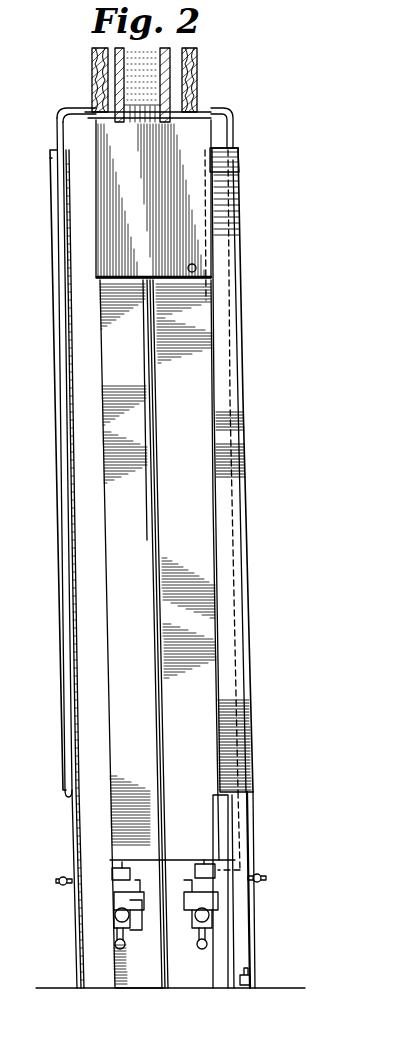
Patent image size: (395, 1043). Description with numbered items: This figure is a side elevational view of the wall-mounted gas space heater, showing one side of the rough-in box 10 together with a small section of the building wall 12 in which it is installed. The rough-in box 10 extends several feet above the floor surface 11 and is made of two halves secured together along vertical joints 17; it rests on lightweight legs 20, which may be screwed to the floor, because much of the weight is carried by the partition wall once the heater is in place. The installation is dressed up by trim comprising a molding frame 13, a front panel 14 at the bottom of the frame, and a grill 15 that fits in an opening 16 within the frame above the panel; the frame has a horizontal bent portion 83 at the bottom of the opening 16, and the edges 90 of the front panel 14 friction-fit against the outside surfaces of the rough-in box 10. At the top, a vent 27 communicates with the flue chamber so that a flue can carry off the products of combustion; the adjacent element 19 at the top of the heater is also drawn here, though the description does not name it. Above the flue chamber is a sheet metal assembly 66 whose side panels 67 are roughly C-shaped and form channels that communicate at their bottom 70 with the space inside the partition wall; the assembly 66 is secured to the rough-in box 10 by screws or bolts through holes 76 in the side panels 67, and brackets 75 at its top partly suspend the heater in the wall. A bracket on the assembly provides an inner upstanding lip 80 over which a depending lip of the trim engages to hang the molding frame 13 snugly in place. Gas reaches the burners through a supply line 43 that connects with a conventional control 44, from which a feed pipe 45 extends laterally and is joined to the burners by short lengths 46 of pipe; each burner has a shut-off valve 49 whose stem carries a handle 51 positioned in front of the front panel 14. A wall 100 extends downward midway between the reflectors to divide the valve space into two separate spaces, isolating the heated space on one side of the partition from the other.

The rough-in box 10 is at (195, 490).
The floor surface 11 is at (58, 988).
The building wall 12 is at (92, 58).
The molding frame 13 is at (72, 405).
The front panel 14 is at (252, 946).
The grill 15 is at (54, 343).
The opening 16 is at (238, 160).
The vertical joints 17 is at (150, 524).
The threaded collar 19 is at (172, 52).
The legs 20 is at (220, 974).
The vent 27 is at (178, 104).
The supply line 43 is at (122, 950).
The control 44 is at (143, 920).
The feed pipe 45 is at (115, 918).
The short lengths of pipe 46 is at (114, 903).
The shut-off valve 49 is at (114, 875).
The handle 51 is at (58, 884).
The sheet metal assembly 66 is at (196, 139).
The side panels 67 is at (108, 238).
The bottom of channel 70 is at (128, 280).
The brackets 75 is at (116, 92).
The holes 76 is at (197, 268).
The upstanding lip 80 is at (220, 110).
The horizontal bent portion 83 is at (251, 980).
The edges 90 is at (242, 826).
The wall 100 is at (158, 986).